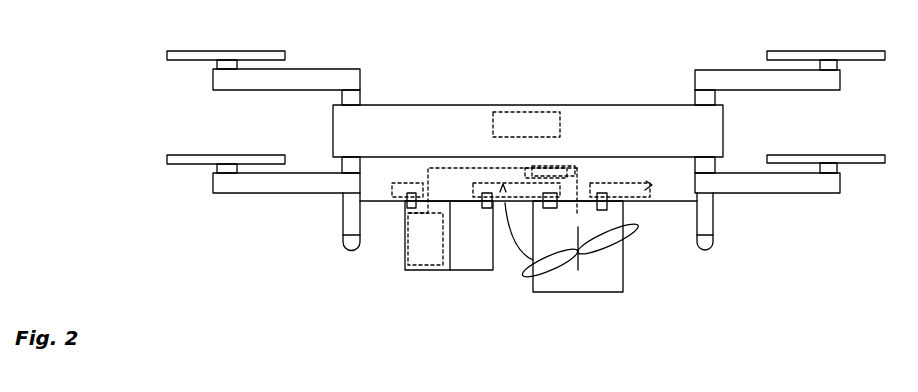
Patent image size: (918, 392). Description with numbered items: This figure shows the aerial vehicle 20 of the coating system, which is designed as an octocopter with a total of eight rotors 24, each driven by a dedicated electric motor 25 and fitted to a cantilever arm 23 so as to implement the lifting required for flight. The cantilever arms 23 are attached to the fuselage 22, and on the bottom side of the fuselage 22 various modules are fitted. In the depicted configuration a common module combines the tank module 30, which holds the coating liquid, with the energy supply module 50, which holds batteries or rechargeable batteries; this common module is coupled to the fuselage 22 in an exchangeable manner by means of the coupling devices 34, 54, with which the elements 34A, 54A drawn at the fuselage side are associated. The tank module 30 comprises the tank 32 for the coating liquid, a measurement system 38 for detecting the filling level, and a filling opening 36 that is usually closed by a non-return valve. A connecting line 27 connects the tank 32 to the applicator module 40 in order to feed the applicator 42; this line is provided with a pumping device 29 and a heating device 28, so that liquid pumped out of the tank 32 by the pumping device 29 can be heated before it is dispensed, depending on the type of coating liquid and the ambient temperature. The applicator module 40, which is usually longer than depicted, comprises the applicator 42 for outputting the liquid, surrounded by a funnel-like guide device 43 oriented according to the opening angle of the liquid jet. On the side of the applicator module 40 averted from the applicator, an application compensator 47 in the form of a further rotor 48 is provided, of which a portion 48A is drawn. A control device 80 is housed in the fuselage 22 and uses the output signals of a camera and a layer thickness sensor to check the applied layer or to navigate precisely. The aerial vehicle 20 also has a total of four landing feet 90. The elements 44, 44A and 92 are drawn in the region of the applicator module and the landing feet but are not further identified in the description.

The aerial vehicle 20 is at (172, 118).
The fuselage 22 is at (606, 126).
The cantilever arms 23 is at (292, 80).
The rotor propeller 24 is at (226, 53).
The electric motors 25 is at (835, 67).
The connecting line 27 is at (480, 168).
The heating device 28 is at (555, 168).
The pumping device 29 is at (525, 170).
The tank module 30 is at (430, 290).
The tank 32 is at (427, 270).
The coupling device 34 is at (470, 222).
The coupling device 54 is at (343, 212).
The leg connector 34A is at (387, 199).
The support connector 54A is at (392, 188).
The filling opening 36 is at (442, 232).
The measurement system 38 is at (428, 270).
The applicator module 40 is at (568, 270).
The applicator 42 is at (637, 240).
The funnel-like guide device 43 is at (638, 222).
The electrical connector 44 is at (620, 188).
The connector end 44A is at (705, 250).
The application compensator 47 is at (606, 304).
The further rotor 48 is at (578, 250).
The blade 48A is at (590, 246).
The energy supply module 50 is at (468, 286).
The control device 80 is at (527, 120).
The landing feet 90 is at (407, 252).
The fastener 92 is at (343, 240).